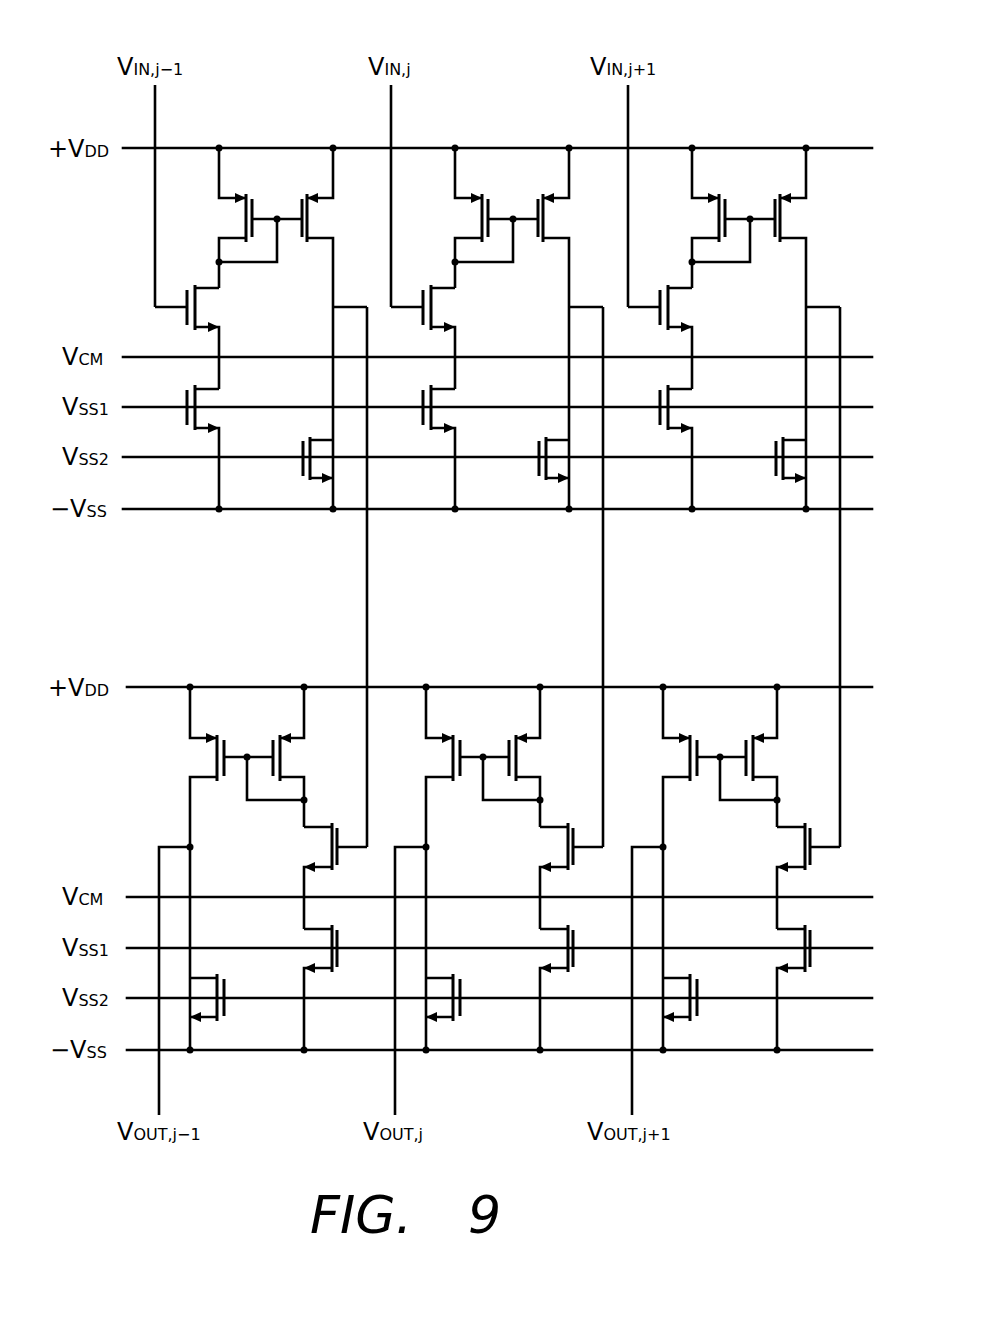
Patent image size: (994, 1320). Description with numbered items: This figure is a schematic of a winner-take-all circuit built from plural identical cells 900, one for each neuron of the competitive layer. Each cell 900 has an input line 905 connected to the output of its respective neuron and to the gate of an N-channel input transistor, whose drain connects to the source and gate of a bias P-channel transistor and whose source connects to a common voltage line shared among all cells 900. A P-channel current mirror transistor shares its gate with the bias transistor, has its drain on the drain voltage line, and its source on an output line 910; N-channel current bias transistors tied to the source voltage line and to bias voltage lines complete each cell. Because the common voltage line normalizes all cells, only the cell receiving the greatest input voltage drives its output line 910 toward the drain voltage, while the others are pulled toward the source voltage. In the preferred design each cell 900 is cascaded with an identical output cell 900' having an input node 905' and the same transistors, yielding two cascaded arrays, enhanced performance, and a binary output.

The cell 900 is at (499, 423).
The input line 905 is at (344, 196).
The output cell 900' is at (502, 870).
The input node 905' is at (652, 577).
The output line 910 is at (676, 1168).